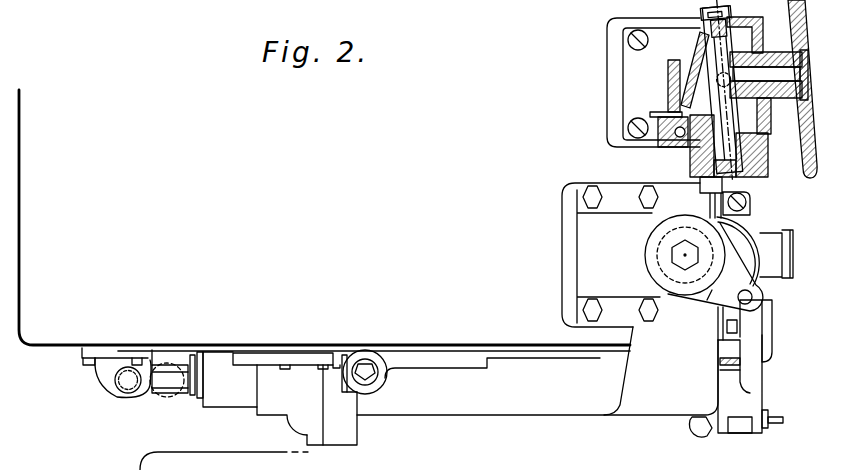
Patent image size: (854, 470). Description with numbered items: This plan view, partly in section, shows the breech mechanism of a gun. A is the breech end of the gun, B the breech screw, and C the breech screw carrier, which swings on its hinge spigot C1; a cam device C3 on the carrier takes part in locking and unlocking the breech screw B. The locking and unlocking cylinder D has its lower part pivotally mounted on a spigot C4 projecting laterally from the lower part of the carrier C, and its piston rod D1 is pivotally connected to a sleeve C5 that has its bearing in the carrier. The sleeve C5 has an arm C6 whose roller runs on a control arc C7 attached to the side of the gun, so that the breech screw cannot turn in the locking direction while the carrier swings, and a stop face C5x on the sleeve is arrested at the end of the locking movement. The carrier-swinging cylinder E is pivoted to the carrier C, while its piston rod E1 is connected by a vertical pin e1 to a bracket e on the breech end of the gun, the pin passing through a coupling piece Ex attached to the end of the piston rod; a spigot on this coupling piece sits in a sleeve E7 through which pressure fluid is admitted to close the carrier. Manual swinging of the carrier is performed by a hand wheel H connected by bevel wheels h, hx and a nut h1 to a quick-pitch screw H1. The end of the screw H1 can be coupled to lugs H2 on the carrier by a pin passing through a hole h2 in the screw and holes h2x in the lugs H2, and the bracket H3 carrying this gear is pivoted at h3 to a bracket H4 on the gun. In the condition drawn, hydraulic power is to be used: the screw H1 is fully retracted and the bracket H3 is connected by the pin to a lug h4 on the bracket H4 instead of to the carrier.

The breech end of the gun A is at (324, 280).
The breech screw B is at (449, 362).
The breech screw carrier C is at (532, 406).
The hinge spigot C1 is at (660, 263).
The cam device C3 is at (347, 434).
The spigot C4 is at (720, 362).
The sleeve C5 is at (747, 395).
The sleeve stop face C5x is at (730, 372).
The arm C6 is at (700, 433).
The control arc C7 is at (748, 250).
The locking and unlocking cylinder D is at (755, 325).
The piston rod D1 is at (740, 430).
The carrier-swinging cylinder E is at (237, 400).
The piston rod E1 is at (200, 363).
The sleeve E7 is at (167, 357).
The coupling piece Ex is at (167, 388).
The bracket e is at (107, 365).
The vertical pin e1 is at (127, 387).
The hand wheel H is at (797, 21).
The quick-pitch screw H1 is at (747, 180).
The lugs H2 is at (718, 300).
The bracket H3 is at (700, 58).
The bracket H4 is at (613, 52).
The bevel wheel h is at (768, 112).
The nut h1 is at (700, 157).
The hole h2 is at (747, 203).
The holes h2x is at (753, 297).
The pivot h3 is at (716, 80).
The lug h4 is at (660, 147).
The bevel wheel hx is at (682, 107).